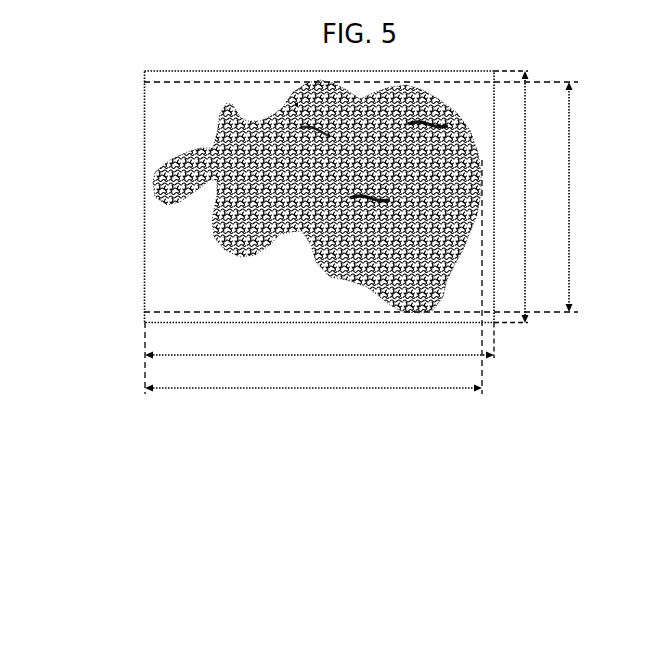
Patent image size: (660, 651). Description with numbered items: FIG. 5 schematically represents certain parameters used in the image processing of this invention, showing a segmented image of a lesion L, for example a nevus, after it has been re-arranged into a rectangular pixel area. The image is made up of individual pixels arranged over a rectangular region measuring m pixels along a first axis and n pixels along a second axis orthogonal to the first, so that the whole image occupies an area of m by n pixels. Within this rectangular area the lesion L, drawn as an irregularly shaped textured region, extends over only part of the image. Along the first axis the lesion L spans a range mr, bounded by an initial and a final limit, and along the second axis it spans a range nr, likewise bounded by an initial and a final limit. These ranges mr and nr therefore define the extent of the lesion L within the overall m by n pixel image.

The lesion L is at (171, 208).
The second-axis pixel count n is at (519, 197).
The first-axis pixel count m is at (319, 344).
The lesion range along second axis nr is at (581, 197).
The lesion range along first axis mr is at (313, 396).